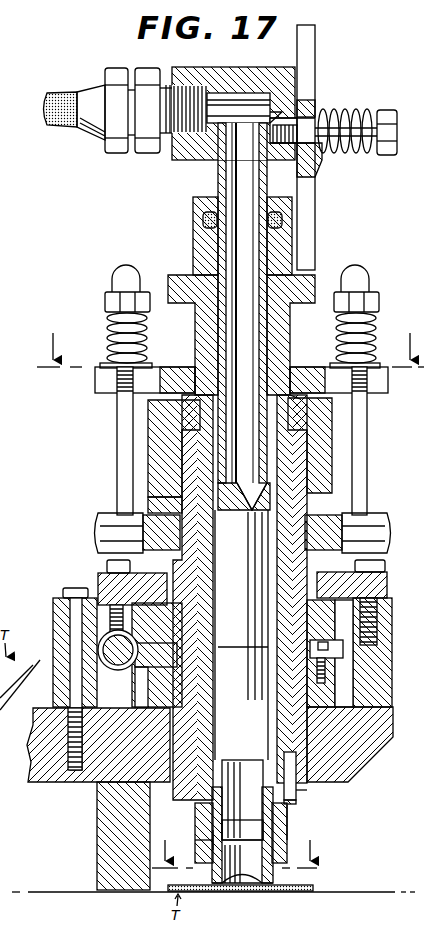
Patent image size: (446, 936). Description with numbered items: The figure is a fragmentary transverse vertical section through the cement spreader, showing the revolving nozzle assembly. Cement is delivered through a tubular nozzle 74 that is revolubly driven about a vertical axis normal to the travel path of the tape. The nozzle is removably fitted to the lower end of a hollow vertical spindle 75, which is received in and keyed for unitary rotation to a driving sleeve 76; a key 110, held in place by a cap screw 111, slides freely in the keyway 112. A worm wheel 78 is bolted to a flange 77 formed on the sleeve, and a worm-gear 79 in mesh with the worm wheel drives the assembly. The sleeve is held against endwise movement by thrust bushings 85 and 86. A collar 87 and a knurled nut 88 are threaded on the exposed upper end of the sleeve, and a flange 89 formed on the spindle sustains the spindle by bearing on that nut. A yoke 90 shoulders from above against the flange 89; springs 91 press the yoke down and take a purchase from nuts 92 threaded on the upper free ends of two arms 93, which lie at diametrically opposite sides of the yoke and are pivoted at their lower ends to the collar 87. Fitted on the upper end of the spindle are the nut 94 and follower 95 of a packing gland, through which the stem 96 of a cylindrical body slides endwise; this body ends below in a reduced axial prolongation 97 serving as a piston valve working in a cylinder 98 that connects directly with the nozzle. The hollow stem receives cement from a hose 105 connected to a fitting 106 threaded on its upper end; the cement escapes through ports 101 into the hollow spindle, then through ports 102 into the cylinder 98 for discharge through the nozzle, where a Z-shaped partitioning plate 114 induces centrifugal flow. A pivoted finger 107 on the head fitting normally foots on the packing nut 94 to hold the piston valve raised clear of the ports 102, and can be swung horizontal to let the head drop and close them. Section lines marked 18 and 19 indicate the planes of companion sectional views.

The fitting 106 is at (222, 70).
The hose 105 is at (75, 95).
The pivoted finger 107 is at (316, 211).
The stem 96 is at (219, 181).
The follower complement of packing gland 95 is at (194, 221).
The packing nut 94 is at (172, 278).
The nuts 92 is at (115, 293).
The springs 91 is at (115, 320).
The section line 18- 18 is at (230, 339).
The yoke 90 is at (166, 369).
The arms 93 is at (118, 446).
The reduced axial prolongation 97 is at (176, 790).
The knurled nut 88 is at (323, 470).
The flange 89 is at (298, 398).
The collar 87 is at (340, 520).
The ports 101 is at (242, 508).
The thrust bushing 85 is at (133, 615).
The worm-gear 79 is at (103, 652).
The thrust bushing 86 is at (167, 768).
The worm wheel 78 is at (343, 652).
The flange 77 is at (325, 675).
The driving sleeve 76 is at (205, 818).
The cylinder 98 is at (218, 842).
The hollow vertical spindle 75 is at (210, 845).
The tubular nozzle 74 is at (270, 880).
The ports 102 is at (226, 778).
The partitioning plate 114 is at (241, 888).
The cap screw 111 is at (312, 790).
The key 110 is at (296, 803).
The keyway 112 is at (290, 818).
The section line 19- 19 is at (237, 843).